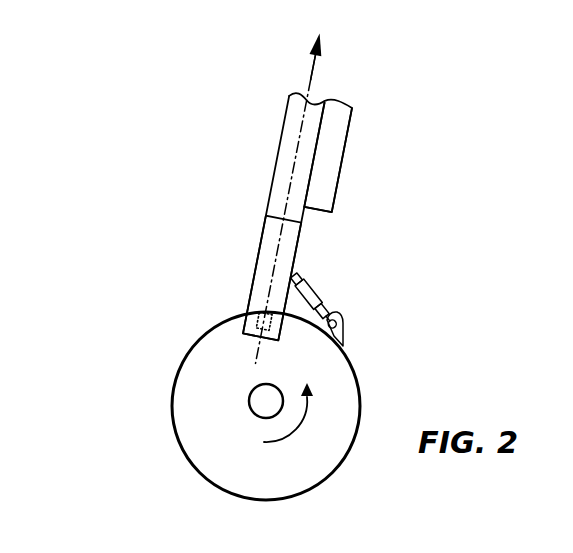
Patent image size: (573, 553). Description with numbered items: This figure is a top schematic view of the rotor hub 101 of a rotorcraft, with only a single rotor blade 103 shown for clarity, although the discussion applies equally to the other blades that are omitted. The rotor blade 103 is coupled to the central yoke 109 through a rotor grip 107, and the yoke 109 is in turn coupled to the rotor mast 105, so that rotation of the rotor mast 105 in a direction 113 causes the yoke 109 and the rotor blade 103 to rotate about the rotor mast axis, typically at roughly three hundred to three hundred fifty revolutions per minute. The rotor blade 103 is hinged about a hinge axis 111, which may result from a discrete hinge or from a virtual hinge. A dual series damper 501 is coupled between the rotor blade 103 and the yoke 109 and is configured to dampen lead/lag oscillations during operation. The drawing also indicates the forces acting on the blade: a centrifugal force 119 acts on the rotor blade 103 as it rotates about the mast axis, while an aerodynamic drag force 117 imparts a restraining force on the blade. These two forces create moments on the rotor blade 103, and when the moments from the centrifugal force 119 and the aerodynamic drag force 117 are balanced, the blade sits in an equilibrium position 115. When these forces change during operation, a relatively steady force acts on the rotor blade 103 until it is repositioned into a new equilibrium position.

The rotor hub 101 is at (132, 205).
The rotor blade 103 is at (345, 150).
The rotor mast 105 is at (250, 411).
The rotor grip 107 is at (256, 270).
The yoke 109 is at (351, 360).
The hinge axis 111 is at (262, 318).
The direction 113 is at (297, 432).
The equilibrium position 115 is at (315, 88).
The aerodynamic drag force 117 is at (267, 135).
The centrifugal force 119 is at (312, 70).
The dual series damper 501 is at (330, 287).